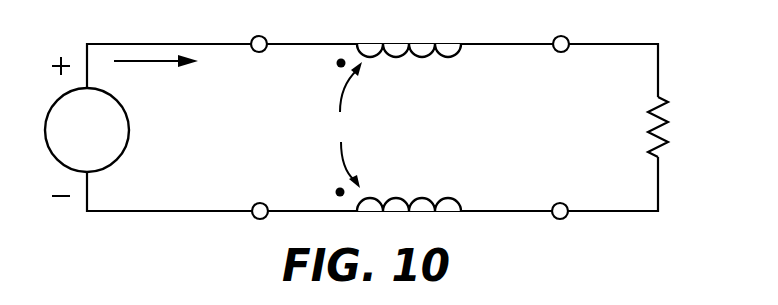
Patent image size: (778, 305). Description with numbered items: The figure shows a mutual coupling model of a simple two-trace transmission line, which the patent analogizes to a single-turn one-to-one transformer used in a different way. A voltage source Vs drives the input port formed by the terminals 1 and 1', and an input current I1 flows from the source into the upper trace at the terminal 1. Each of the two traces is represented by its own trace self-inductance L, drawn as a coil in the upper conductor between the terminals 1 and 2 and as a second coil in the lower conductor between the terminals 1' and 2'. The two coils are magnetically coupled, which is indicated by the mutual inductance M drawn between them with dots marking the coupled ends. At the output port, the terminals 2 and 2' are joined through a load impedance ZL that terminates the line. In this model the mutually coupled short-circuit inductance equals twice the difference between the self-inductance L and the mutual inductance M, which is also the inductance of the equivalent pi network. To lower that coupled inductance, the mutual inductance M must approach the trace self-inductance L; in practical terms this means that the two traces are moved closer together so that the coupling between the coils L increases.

The input terminal 1 is at (266, 26).
The input return terminal 1' is at (271, 189).
The output terminal 2 is at (566, 26).
The output return terminal 2' is at (569, 189).
The trace self-inductance L is at (409, 107).
The mutual inductance M is at (345, 128).
The source voltage Vs is at (66, 130).
The input current I1 is at (156, 81).
The load impedance ZL is at (680, 127).